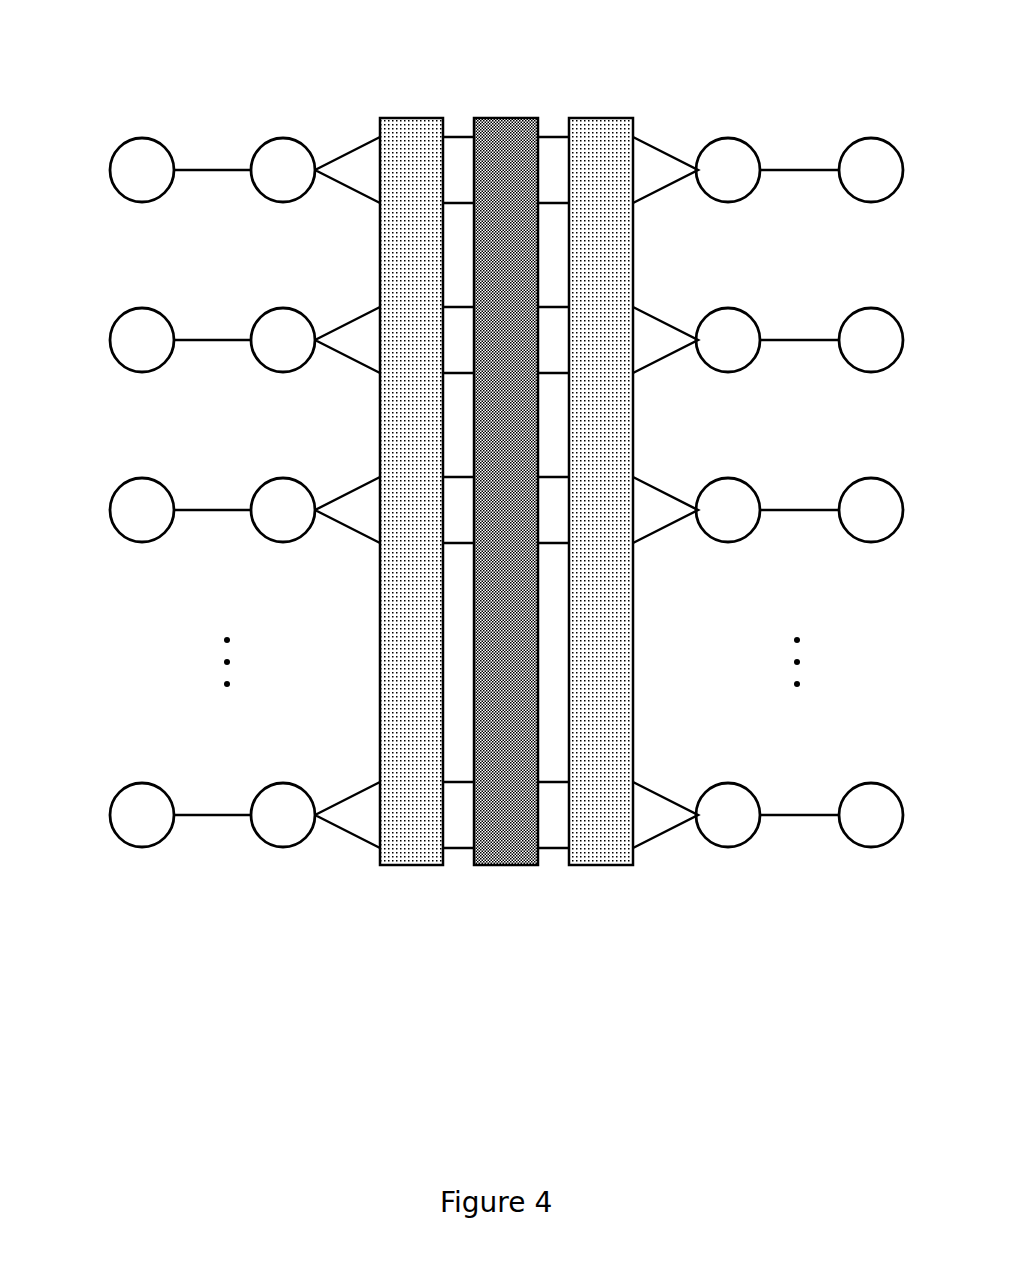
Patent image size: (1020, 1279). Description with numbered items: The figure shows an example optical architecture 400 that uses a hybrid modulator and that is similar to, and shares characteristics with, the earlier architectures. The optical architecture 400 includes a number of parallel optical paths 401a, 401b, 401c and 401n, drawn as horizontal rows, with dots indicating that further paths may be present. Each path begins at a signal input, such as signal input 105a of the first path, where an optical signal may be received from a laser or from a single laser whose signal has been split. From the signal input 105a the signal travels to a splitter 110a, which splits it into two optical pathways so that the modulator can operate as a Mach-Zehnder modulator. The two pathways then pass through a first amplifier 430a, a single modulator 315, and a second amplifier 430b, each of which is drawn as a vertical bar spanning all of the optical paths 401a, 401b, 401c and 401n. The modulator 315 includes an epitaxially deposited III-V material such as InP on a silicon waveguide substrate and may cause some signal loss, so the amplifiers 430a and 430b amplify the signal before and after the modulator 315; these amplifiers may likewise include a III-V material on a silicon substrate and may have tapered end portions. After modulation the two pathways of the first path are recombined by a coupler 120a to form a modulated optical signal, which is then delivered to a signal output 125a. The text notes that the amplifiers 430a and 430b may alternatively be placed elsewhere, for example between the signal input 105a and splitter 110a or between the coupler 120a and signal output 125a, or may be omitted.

The optical architecture 400 is at (192, 67).
The optical path 401a is at (105, 170).
The optical path 401b is at (105, 340).
The optical path 401c is at (105, 510).
The optical path 401n is at (105, 815).
The signal input 105a is at (136, 180).
The splitter 110a is at (275, 180).
The coupler 120a is at (728, 180).
The signal output 125a is at (869, 180).
The amplifier 430a is at (413, 148).
The modulator 315 is at (509, 150).
The amplifier 430b is at (608, 152).